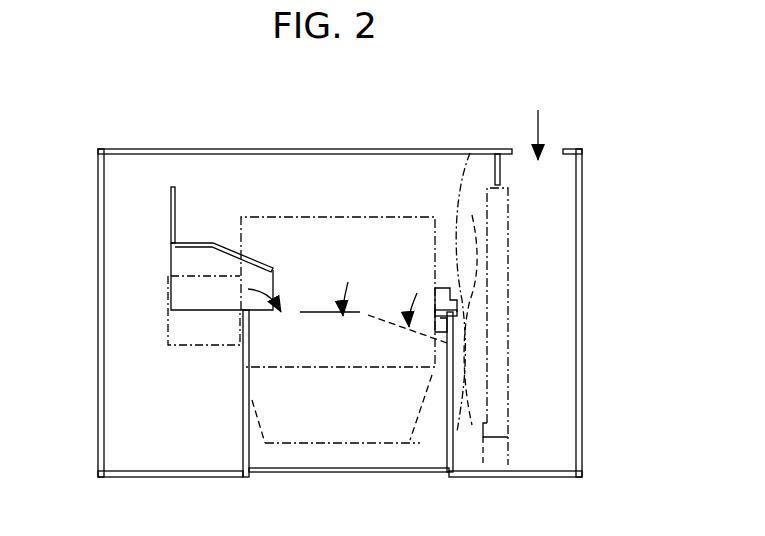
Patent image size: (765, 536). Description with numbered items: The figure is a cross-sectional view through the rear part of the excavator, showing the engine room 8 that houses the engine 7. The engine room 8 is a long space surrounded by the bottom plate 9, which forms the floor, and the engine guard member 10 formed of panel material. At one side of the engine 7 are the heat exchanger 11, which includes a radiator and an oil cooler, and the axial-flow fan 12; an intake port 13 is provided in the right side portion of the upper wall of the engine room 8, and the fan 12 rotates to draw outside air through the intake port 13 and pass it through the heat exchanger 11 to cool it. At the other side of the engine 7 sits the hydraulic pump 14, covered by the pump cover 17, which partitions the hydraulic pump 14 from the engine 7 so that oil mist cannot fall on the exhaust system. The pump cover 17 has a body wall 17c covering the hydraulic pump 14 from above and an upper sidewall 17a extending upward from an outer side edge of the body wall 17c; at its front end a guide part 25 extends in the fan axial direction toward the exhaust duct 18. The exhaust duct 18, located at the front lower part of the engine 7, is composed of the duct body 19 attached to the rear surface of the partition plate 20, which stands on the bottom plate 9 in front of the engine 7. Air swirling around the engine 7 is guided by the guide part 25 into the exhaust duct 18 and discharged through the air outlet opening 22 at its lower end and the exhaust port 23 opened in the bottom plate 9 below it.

The engine 7 is at (320, 450).
The engine room 8 is at (556, 360).
The bottom plate 9 is at (169, 478).
The engine guard member 10 is at (582, 310).
The heat exchanger 11 is at (508, 237).
The fan 12 is at (470, 153).
The intake port 13 is at (556, 150).
The hydraulic pump 14 is at (167, 325).
The pump cover 17 is at (159, 207).
The upper sidewall 17a is at (172, 207).
The body wall 17c is at (198, 243).
The exhaust duct 18 is at (456, 414).
The duct body 19 is at (242, 428).
The partition plate 20 is at (357, 173).
The air outlet opening 22 is at (385, 465).
The exhaust port 23 is at (268, 478).
The guide part 25 is at (266, 258).